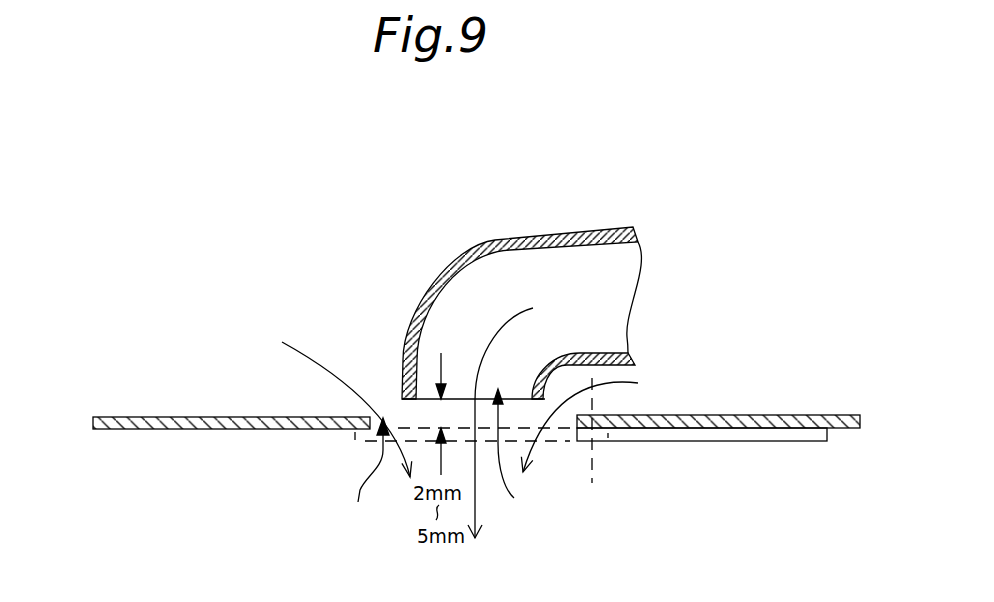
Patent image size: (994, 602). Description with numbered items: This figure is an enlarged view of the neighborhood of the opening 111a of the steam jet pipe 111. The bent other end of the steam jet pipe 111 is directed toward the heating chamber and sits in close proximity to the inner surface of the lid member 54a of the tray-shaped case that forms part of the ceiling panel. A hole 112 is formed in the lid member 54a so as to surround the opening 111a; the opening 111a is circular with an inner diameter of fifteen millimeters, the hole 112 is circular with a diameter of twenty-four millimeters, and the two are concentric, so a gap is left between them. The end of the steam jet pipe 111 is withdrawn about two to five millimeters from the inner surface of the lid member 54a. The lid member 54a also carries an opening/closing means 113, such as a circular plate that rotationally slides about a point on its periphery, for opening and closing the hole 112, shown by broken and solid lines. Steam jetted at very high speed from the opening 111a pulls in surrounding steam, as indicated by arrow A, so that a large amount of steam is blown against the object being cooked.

The steam jet pipe 111 is at (503, 247).
The opening of the steam jet pipe 111a is at (527, 460).
The hole 112 is at (358, 485).
The opening/closing means 113 is at (703, 442).
The lid member 54a is at (142, 430).
The arrow indicating pulled-in steam A is at (461, 399).